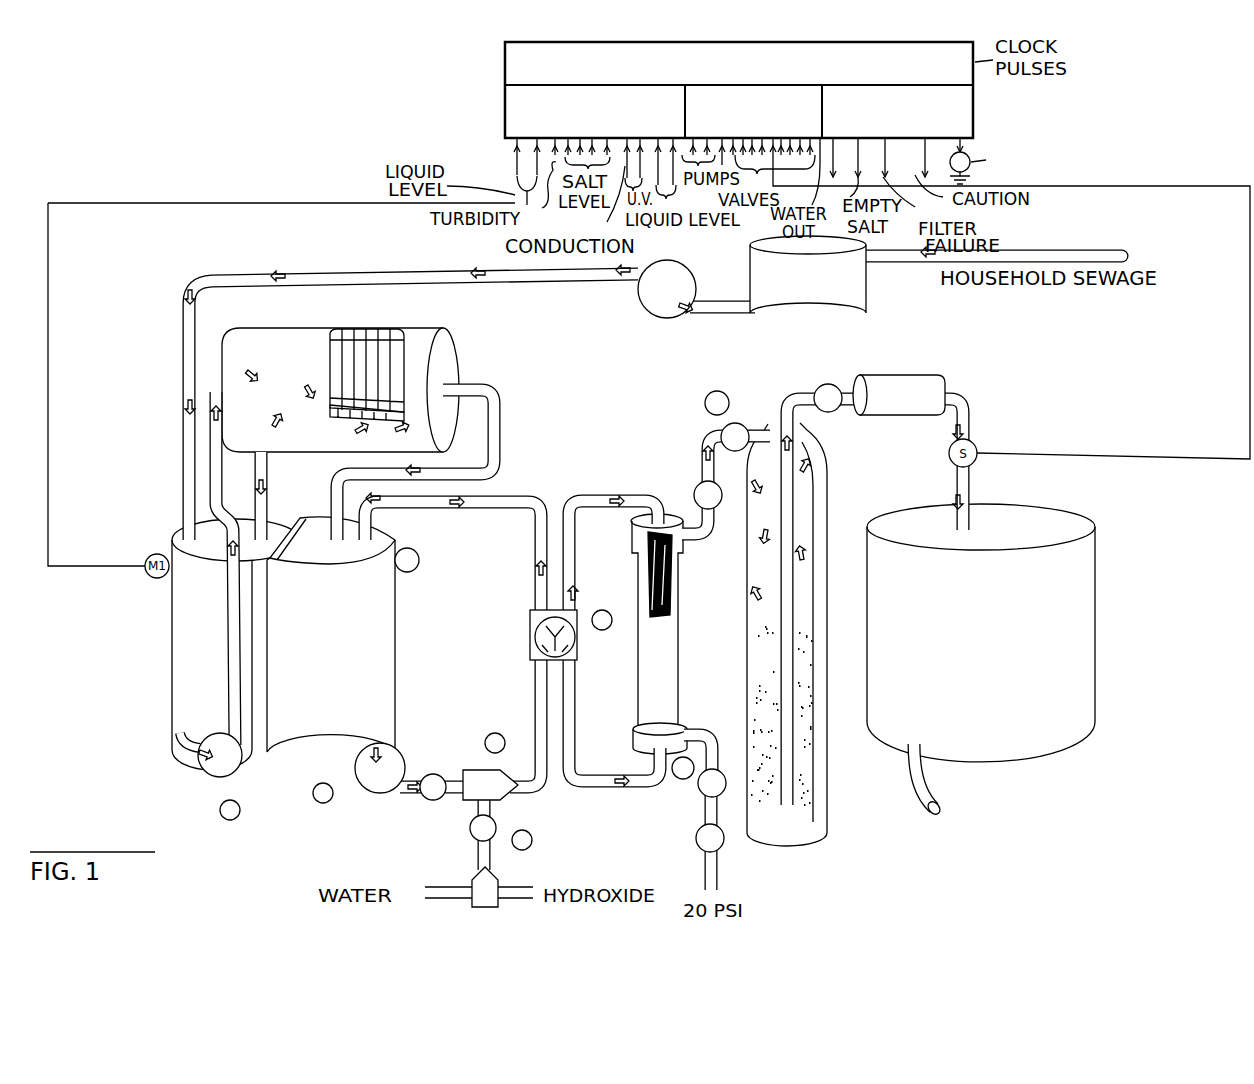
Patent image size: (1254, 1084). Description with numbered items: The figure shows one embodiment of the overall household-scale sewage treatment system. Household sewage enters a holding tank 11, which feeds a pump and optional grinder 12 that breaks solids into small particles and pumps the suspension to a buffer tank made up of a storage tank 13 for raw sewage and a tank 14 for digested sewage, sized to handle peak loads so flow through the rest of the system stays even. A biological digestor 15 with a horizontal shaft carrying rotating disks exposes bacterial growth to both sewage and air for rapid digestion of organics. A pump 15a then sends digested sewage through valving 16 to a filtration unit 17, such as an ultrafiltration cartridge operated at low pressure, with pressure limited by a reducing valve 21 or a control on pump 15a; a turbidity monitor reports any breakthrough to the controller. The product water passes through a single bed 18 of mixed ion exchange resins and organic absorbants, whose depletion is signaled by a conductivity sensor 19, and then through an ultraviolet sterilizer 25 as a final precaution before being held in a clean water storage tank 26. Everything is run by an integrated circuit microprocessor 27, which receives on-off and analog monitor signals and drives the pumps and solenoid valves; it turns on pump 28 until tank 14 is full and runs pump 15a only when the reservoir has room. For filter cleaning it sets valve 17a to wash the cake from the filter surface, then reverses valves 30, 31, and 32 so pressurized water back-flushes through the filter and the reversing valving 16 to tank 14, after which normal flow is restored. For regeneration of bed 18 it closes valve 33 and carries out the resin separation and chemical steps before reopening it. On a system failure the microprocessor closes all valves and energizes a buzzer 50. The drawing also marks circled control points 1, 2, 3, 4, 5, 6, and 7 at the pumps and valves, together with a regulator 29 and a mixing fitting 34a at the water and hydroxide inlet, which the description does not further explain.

The holding tank 11 is at (862, 298).
The pump and optional grinder 12 is at (693, 283).
The storage tank 13 is at (172, 642).
The tank 14 is at (392, 622).
The biological digestor 15 is at (313, 329).
The pump 15a is at (400, 756).
The valving 16 is at (530, 618).
The filtration unit 17 is at (680, 605).
The valve 17a is at (693, 494).
The bed 18 is at (825, 568).
The conductivity sensor 19 is at (829, 384).
The reducing valve 21 is at (424, 800).
The ultraviolet sterilizer 25 is at (922, 376).
The clean water storage tank 26 is at (1088, 560).
The microprocessor 27 is at (975, 103).
The pump 28 is at (208, 772).
The pressure regulator 29 is at (724, 842).
The valve 30 is at (507, 778).
The valve 31 is at (496, 825).
The valve 32 is at (718, 770).
The valve 33 is at (746, 425).
The mixer 34a is at (500, 900).
The buzzer 50 is at (970, 152).
The control signal 1 is at (227, 782).
The control signal 2 is at (353, 793).
The control signal 3 is at (582, 637).
The control signal 4 is at (488, 766).
The control signal 5 is at (500, 833).
The control signal 6 is at (698, 782).
The control signal 7 is at (727, 423).